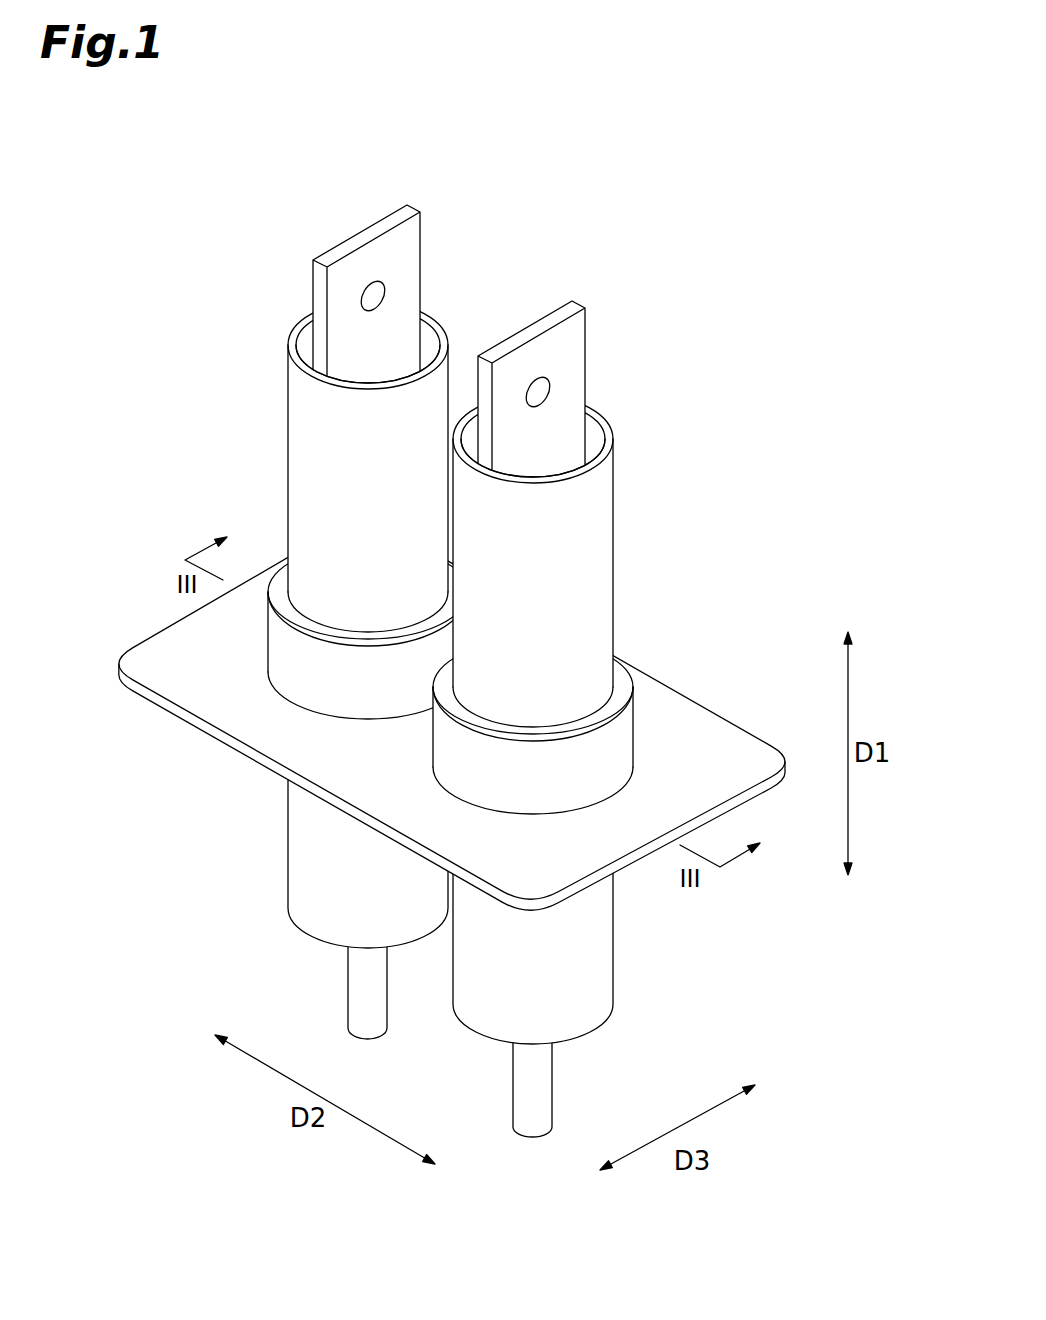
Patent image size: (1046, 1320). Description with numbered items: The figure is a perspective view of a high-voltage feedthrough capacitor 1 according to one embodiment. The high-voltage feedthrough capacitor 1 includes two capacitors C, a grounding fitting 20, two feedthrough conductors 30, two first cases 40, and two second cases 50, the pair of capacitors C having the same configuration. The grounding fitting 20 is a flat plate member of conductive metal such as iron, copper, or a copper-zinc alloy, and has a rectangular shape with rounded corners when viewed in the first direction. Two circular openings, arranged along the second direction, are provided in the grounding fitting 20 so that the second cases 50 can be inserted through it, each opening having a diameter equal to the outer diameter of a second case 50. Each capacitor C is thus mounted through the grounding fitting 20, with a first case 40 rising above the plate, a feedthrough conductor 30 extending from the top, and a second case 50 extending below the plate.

The high-voltage feedthrough capacitor 1 is at (667, 279).
The grounding fitting 20 is at (673, 720).
The feedthrough conductor 30 is at (370, 235).
The first case 40 is at (300, 449).
The second case 50 is at (305, 855).
The capacitor C is at (275, 652).